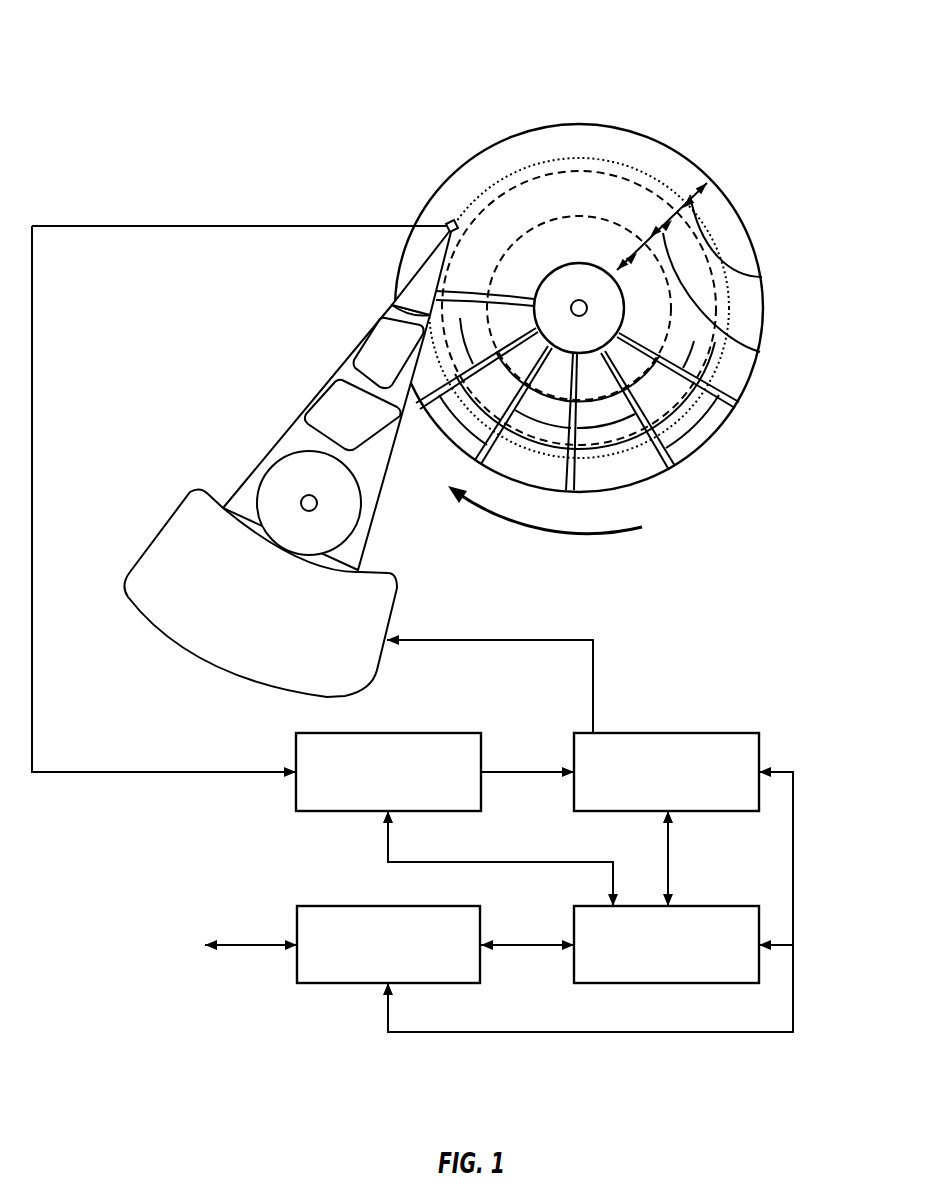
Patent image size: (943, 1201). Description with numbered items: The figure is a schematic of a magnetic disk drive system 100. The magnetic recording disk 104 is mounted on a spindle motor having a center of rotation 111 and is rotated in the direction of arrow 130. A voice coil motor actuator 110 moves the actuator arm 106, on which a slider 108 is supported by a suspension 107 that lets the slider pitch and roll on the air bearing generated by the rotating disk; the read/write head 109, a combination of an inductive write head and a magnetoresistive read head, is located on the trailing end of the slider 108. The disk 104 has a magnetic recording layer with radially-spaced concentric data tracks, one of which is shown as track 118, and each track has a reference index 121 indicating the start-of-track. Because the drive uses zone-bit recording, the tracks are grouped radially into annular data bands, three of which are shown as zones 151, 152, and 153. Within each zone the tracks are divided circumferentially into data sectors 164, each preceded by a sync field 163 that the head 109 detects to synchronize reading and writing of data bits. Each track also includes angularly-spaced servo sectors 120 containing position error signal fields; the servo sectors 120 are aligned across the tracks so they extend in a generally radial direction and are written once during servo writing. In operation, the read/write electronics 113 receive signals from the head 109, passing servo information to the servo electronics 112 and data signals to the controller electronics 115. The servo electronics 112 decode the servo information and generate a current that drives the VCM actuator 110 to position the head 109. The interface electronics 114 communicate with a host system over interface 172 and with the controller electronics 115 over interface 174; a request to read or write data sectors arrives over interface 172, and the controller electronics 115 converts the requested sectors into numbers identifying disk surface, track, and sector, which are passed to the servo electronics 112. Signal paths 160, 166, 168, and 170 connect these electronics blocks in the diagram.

The magnetic disk drive system 100 is at (142, 54).
The magnetic recording disk 104 is at (543, 128).
The actuator arm 106 is at (363, 330).
The suspension 107 is at (418, 283).
The slider 108 is at (452, 225).
The read/write head 109 is at (455, 220).
The voice coil motor (VCM) actuator 110 is at (186, 498).
The center of rotation 111 is at (579, 302).
The servo electronics 112 is at (737, 732).
The read/write (R/W) electronics 113 is at (457, 732).
The interface electronics 114 is at (320, 906).
The controller electronics 115 is at (598, 985).
The data track 118 is at (650, 166).
The servo sectors 120 is at (481, 472).
The reference index 121 is at (736, 403).
The direction of rotation 130 is at (593, 541).
The data zone 151 is at (760, 279).
The data zone 152 is at (768, 352).
The data zone 153 is at (627, 262).
The servo-controller signal path 160 is at (668, 867).
The sync fields 163 is at (455, 426).
The data sectors 164 is at (475, 441).
The read/write to servo signal path 166 is at (533, 773).
The controller to read/write signal path 168 is at (560, 862).
The controller to servo signal path 170 is at (795, 867).
The interface 172 is at (250, 943).
The interface 174 is at (530, 942).